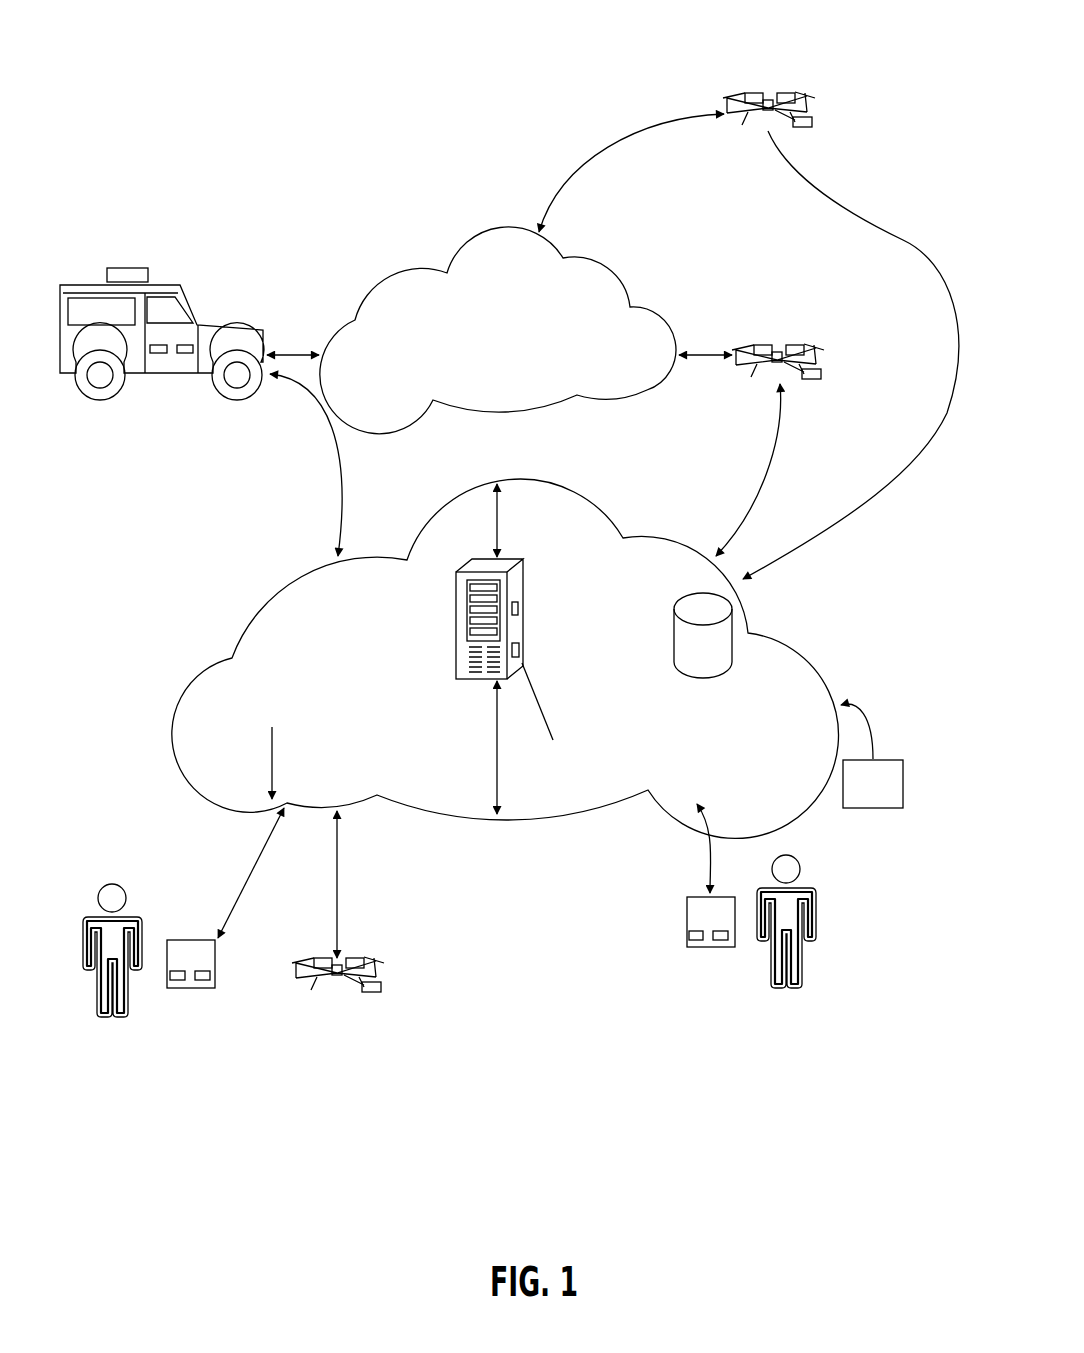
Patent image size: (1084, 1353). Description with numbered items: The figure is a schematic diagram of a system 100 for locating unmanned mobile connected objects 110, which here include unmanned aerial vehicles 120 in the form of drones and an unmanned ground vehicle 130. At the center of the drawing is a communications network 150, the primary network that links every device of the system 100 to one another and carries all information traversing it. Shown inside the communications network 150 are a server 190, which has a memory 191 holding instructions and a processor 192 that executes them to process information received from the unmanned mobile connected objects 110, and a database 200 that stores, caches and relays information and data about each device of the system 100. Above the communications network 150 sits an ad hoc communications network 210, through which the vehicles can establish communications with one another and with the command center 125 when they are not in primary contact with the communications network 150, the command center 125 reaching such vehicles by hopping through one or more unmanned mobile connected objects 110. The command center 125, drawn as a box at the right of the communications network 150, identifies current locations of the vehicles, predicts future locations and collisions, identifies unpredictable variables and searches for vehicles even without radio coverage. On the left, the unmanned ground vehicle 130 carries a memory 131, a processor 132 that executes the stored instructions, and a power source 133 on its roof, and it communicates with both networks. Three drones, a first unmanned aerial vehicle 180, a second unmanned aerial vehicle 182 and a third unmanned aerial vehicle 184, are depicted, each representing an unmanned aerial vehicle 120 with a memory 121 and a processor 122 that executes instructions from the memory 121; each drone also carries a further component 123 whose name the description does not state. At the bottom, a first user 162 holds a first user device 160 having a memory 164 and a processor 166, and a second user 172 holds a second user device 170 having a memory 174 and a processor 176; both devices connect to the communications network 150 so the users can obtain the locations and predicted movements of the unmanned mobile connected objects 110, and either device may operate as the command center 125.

The system 100 is at (225, 183).
The unmanned mobile connected object 110 is at (103, 419).
The unmanned aerial vehicle 120 is at (732, 142).
The memory 121 is at (753, 96).
The processor 122 is at (783, 96).
The payload module 123 is at (813, 126).
The command center 125 is at (906, 729).
The unmanned ground vehicle 130 is at (80, 285).
The memory 131 is at (158, 354).
The processor 132 is at (188, 354).
The power source 133 is at (122, 268).
The communications network 150 is at (178, 697).
The first user device 160 is at (217, 967).
The first user 162 is at (105, 1019).
The memory 164 is at (177, 981).
The processor 166 is at (204, 981).
The second user device 170 is at (687, 917).
The second user 172 is at (802, 981).
The memory 174 is at (694, 941).
The processor 176 is at (723, 941).
The first unmanned aerial vehicle 180 is at (835, 81).
The second unmanned aerial vehicle 182 is at (853, 352).
The third unmanned aerial vehicle 184 is at (410, 954).
The server 190 is at (455, 598).
The memory 191 is at (518, 607).
The processor 192 is at (520, 652).
The database 200 is at (733, 668).
The ad hoc communications network 210 is at (430, 272).